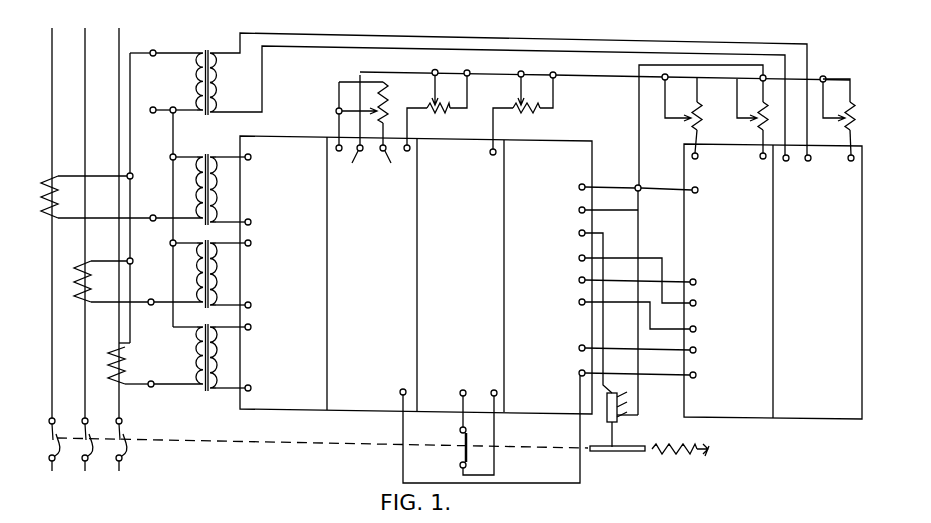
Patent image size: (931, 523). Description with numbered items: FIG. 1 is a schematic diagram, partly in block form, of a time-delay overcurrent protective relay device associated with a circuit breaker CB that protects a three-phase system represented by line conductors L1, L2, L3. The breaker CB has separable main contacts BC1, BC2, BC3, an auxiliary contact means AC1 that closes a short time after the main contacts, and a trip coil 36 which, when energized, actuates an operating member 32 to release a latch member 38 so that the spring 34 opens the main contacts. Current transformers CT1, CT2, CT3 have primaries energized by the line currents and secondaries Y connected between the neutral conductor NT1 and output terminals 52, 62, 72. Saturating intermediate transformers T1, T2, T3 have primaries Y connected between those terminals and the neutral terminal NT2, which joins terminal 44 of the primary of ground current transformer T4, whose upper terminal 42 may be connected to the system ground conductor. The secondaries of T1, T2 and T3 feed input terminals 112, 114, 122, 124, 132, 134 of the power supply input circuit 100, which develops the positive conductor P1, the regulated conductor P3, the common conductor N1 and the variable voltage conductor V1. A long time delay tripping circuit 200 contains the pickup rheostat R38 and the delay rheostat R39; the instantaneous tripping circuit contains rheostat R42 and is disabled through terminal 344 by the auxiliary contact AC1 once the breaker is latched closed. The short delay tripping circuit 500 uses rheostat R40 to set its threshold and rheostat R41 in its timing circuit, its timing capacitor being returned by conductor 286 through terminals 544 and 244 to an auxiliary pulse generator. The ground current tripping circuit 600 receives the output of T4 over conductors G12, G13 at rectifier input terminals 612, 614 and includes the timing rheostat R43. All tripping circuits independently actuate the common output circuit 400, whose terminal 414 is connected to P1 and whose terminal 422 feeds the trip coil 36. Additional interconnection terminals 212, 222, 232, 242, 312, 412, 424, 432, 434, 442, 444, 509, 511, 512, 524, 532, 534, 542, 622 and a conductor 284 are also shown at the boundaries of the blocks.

The line conductor L1 is at (52, 31).
The line conductor L2 is at (85, 31).
The line conductor L3 is at (119, 31).
The main line contact BC1 is at (49, 457).
The main line contact BC2 is at (91, 457).
The main line contact BC3 is at (132, 457).
The current transformer CT1 is at (38, 180).
The current transformer CT2 is at (72, 264).
The current transformer CT3 is at (128, 350).
The neutral terminal NT1 is at (138, 339).
The neutral terminal NT2 is at (154, 176).
The terminal 42 is at (150, 50).
The terminal 44 is at (150, 108).
The output terminal 52 is at (151, 215).
The output terminal 62 is at (150, 299).
The output terminal 72 is at (149, 381).
The intermediate transformer T1 is at (217, 154).
The intermediate transformer T2 is at (203, 242).
The intermediate transformer T3 is at (200, 389).
The ground current transformer T4 is at (222, 49).
The conductor G12 is at (481, 34).
The conductor G13 is at (354, 57).
The input terminal 112 is at (242, 146).
The input terminal 114 is at (244, 216).
The input terminal 122 is at (244, 244).
The input terminal 124 is at (247, 303).
The input terminal 132 is at (245, 326).
The input terminal 134 is at (245, 391).
The power supply input circuit 100 is at (288, 414).
The long time delay tripping circuit 200 is at (378, 416).
The output circuit 400 is at (554, 418).
The short delay tripping circuit 500 is at (729, 422).
The ground current tripping circuit 600 is at (806, 424).
The variable voltage conductor V1 is at (475, 66).
The rheostat R38 is at (392, 99).
The rheostat R39 is at (456, 106).
The rheostat R42 is at (536, 116).
The rheostat R40 is at (684, 128).
The rheostat R41 is at (756, 106).
The rheostat R43 is at (856, 111).
The long time circuit terminal 212 is at (337, 145).
The long time circuit terminal 222 is at (347, 131).
The long time circuit terminal 232 is at (393, 155).
The long time circuit terminal 242 is at (409, 145).
The terminal 244 is at (400, 391).
The instantaneous circuit terminal 312 is at (492, 148).
The terminal 344 is at (492, 391).
The output circuit terminal 412 is at (586, 186).
The terminal 414 is at (585, 208).
The terminal 422 is at (585, 231).
The output circuit terminal 424 is at (578, 263).
The output circuit terminal 432 is at (576, 287).
The output circuit terminal 434 is at (579, 303).
The output circuit terminal 442 is at (578, 350).
The output circuit terminal 444 is at (580, 374).
The short delay circuit terminal 509 is at (690, 157).
The short delay circuit terminal 511 is at (762, 153).
The short delay circuit terminal 512 is at (692, 188).
The short delay circuit terminal 524 is at (696, 301).
The short delay circuit terminal 532 is at (695, 279).
The short delay circuit terminal 534 is at (696, 332).
The short delay circuit terminal 542 is at (704, 355).
The terminal 544 is at (696, 378).
The input terminal 612 is at (787, 161).
The input terminal 614 is at (810, 152).
The ground current circuit terminal 622 is at (856, 152).
The positive conductor P1 is at (657, 191).
The positive conductor P3 is at (634, 280).
The common conductor N1 is at (631, 345).
The trip signal conductor 284 is at (648, 253).
The conductor 286 is at (568, 482).
The auxiliary contact means AC1 is at (460, 431).
The operating member 32 is at (618, 437).
The spring 34 is at (669, 438).
The trip coil 36 is at (610, 418).
The latch member 38 is at (636, 456).
The circuit breaker CB is at (351, 457).